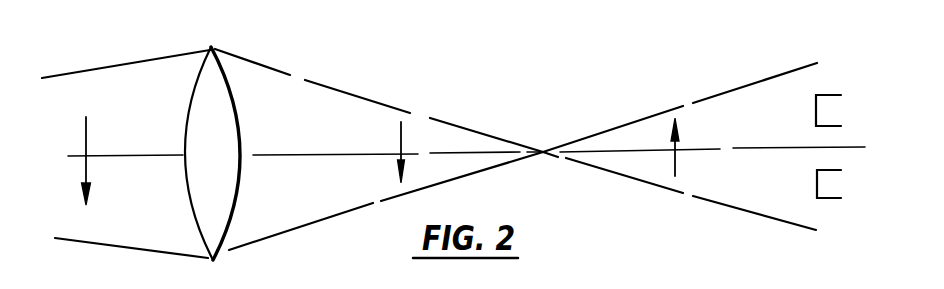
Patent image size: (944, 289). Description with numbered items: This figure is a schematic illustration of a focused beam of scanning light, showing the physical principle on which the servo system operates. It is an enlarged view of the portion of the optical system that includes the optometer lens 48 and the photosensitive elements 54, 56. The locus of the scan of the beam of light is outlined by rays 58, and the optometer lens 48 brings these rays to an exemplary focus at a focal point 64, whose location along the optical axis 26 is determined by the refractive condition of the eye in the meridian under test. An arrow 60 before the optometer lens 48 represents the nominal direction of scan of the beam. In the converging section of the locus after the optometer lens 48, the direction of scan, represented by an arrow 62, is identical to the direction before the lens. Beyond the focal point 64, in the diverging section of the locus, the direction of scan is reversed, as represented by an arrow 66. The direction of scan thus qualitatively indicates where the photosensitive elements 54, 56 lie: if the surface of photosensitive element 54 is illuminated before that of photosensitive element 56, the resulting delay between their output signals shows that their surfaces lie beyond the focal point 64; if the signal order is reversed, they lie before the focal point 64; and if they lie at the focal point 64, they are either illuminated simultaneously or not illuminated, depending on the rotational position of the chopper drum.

The optical axis 26 is at (311, 153).
The rays 58 is at (107, 66).
The optometer lens 48 is at (184, 183).
The arrow 60 is at (87, 130).
The arrow 62 is at (397, 172).
The focal point 64 is at (543, 150).
The arrow 66 is at (677, 160).
The photosensitive element 56 is at (816, 111).
The photosensitive element 54 is at (817, 181).